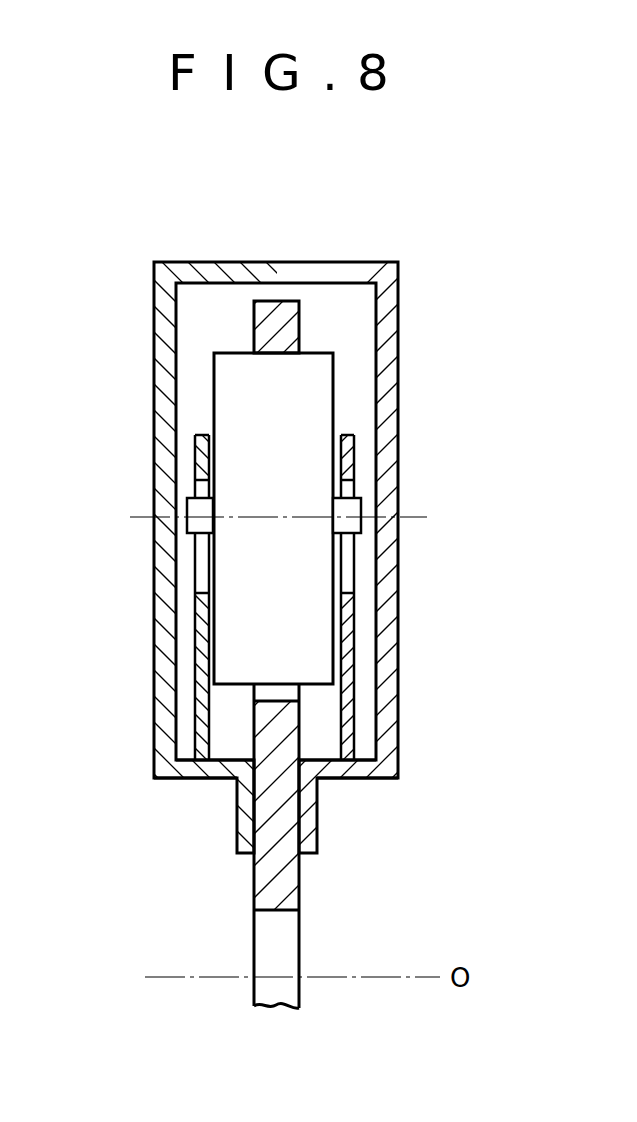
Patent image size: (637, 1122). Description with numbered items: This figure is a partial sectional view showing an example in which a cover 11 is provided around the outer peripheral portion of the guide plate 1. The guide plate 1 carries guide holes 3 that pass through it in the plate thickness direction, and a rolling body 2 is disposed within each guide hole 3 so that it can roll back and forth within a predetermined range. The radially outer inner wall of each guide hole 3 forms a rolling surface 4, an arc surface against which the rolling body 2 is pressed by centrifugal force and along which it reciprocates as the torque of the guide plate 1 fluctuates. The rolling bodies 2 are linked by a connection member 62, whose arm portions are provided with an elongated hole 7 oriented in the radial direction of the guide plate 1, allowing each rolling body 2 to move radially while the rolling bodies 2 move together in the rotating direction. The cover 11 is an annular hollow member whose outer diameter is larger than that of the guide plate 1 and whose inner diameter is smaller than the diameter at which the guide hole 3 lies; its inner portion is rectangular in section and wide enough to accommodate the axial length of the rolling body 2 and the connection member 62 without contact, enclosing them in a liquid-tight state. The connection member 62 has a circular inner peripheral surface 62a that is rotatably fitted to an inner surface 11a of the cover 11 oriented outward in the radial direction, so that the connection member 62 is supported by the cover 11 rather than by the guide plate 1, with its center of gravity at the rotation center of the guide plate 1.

The guide plate 1 is at (285, 890).
The rolling body 2 is at (310, 372).
The guide hole 3 is at (285, 693).
The rolling surface 4 is at (274, 354).
The elongated hole 7 is at (200, 567).
The cover 11 is at (393, 293).
The inner surface 11a is at (228, 760).
The connection member 62 is at (200, 447).
The inner peripheral surface 62a is at (202, 762).